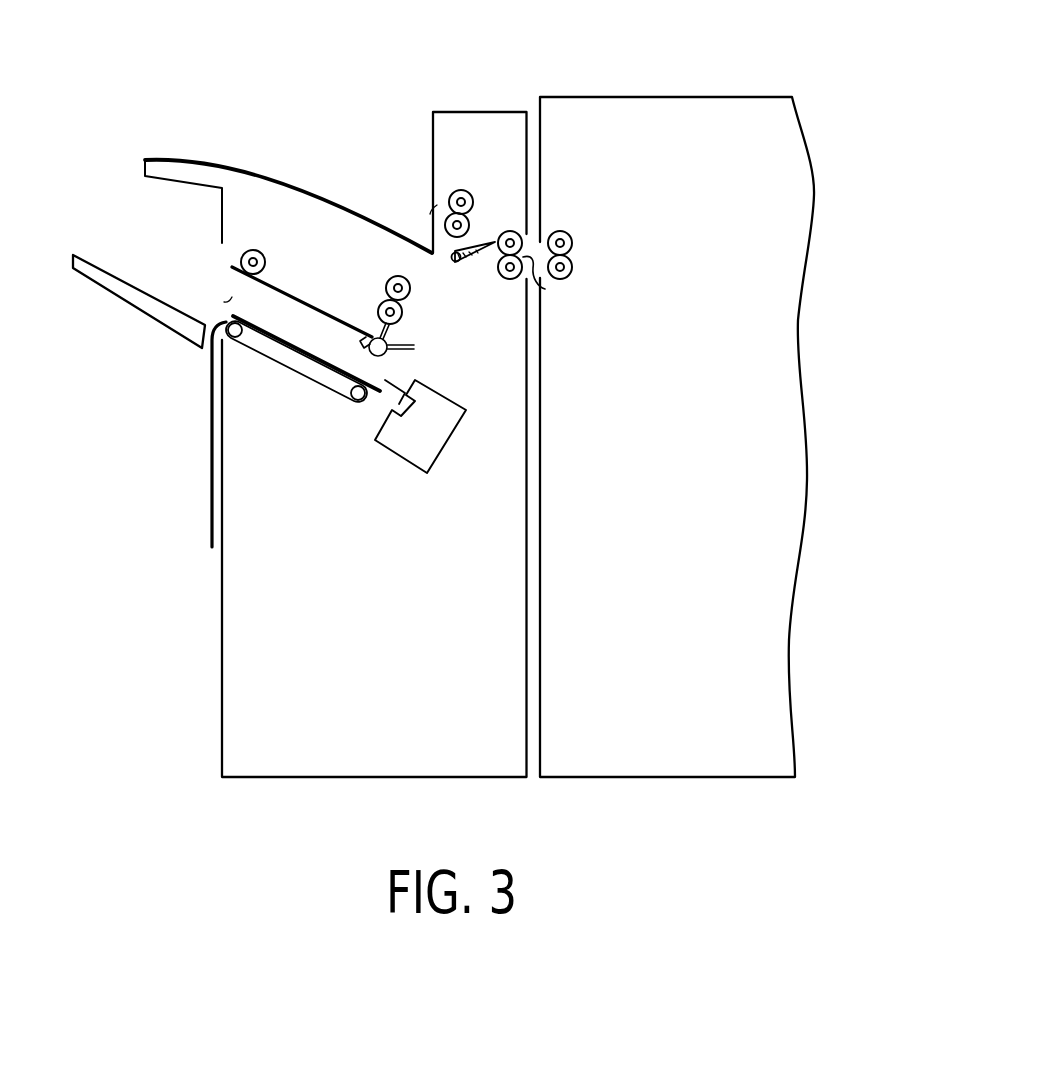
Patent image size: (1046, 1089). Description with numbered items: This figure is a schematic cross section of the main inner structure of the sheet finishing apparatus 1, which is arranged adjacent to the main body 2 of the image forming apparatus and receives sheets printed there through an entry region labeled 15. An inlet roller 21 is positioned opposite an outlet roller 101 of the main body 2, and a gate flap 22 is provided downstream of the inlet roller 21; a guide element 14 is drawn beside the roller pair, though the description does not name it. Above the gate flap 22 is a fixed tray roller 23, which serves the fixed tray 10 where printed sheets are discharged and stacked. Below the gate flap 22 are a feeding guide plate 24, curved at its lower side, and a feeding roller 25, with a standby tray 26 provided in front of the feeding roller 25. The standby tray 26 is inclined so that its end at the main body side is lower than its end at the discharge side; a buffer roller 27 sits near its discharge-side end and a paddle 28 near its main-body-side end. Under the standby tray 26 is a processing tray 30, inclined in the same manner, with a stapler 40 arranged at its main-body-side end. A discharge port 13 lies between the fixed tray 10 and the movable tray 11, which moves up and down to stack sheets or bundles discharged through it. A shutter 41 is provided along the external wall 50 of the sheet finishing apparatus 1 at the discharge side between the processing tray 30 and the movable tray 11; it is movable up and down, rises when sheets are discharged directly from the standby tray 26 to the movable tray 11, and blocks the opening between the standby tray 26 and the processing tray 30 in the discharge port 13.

The sheet finishing apparatus 1 is at (363, 97).
The main body of the image forming apparatus 2 is at (692, 95).
The fixed tray 10 is at (322, 193).
The movable tray 11 is at (150, 293).
The discharge port 13 is at (227, 300).
The sheet guide 14 is at (545, 289).
The sheet inlet 15 is at (437, 205).
The inlet roller 21 is at (517, 234).
The gate flap 22 is at (470, 264).
The fixed tray roller 23 is at (461, 190).
The feeding guide plate 24 is at (460, 284).
The feeding roller 25 is at (386, 289).
The standby tray 26 is at (298, 288).
The buffer roller 27 is at (255, 250).
The paddle 28 is at (410, 338).
The processing tray 30 is at (297, 344).
The stapler 40 is at (450, 438).
The shutter 41 is at (210, 447).
The external wall 50 is at (222, 490).
The outlet roller 101 is at (574, 243).